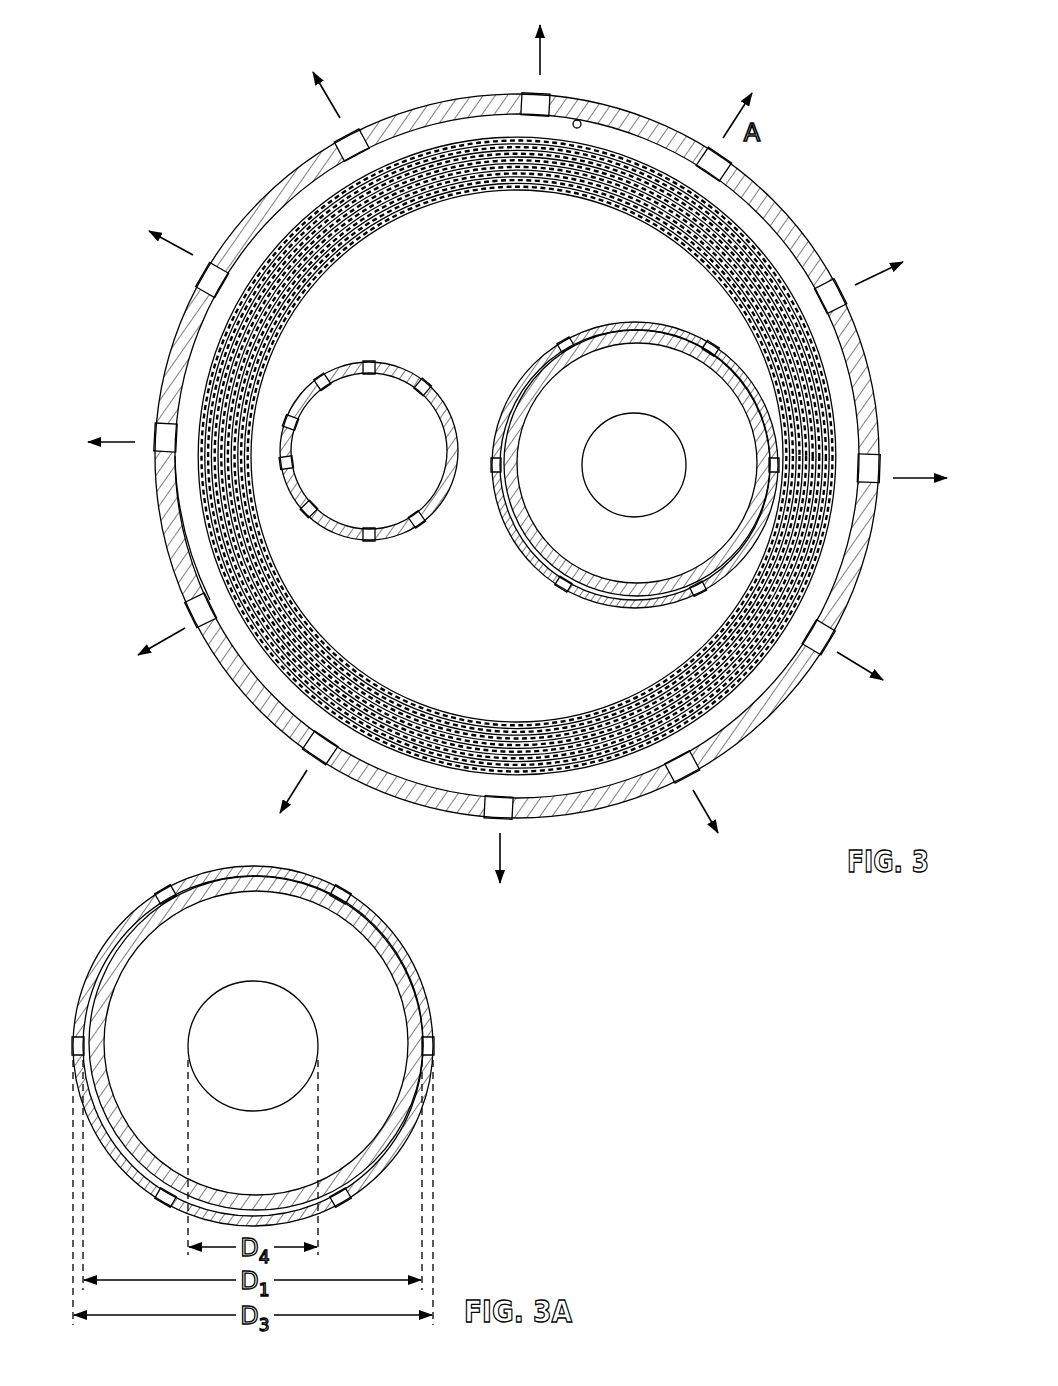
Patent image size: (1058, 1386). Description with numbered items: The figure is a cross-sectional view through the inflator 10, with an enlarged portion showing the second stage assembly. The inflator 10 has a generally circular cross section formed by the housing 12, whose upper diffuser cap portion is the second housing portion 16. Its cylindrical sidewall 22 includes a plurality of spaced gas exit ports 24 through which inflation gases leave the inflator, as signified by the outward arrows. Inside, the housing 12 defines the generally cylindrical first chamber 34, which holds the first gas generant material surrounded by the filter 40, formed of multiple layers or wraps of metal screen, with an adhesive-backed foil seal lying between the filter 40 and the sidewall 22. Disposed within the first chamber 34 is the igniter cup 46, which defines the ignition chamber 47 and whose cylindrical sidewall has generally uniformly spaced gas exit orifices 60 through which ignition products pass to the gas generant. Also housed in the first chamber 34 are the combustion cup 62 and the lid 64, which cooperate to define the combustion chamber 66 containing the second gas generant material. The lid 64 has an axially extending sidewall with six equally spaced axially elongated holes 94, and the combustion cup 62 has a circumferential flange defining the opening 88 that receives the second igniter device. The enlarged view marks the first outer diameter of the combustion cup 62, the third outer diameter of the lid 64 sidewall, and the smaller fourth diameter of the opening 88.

In FIG. 3, the inflator 10 is at (474, 428).
In FIG. 3, the housing 12 is at (509, 428).
In FIG. 3, the second housing portion 16 is at (167, 552).
In FIG. 3, the sidewall 22 is at (793, 222).
In FIG. 3, the gas exit ports 24 is at (836, 293).
In FIG. 3, the first chamber 34 is at (580, 120).
In FIG. 3, the filter 40 is at (800, 537).
In FIG. 3, the igniter cup 46 is at (275, 453).
In FIG. 3, the ignition chamber 47 is at (351, 464).
In FIG. 3, the gas exit orifices 60 is at (284, 422).
In FIG. 3, the combustion cup 62 is at (623, 575).
In FIG. 3A, the combustion cup 62 is at (253, 1052).
In FIG. 3, the lid 64 is at (525, 570).
In FIG. 3A, the lid 64 is at (130, 1186).
In FIG. 3, the combustion chamber 66 is at (654, 575).
In FIG. 3A, the combustion chamber 66 is at (313, 1046).
In FIG. 3, the opening 88 is at (643, 412).
In FIG. 3A, the opening 88 is at (253, 982).
In FIG. 3, the axially elongated holes 94 is at (567, 342).
In FIG. 3A, the axially elongated holes 94 is at (170, 888).